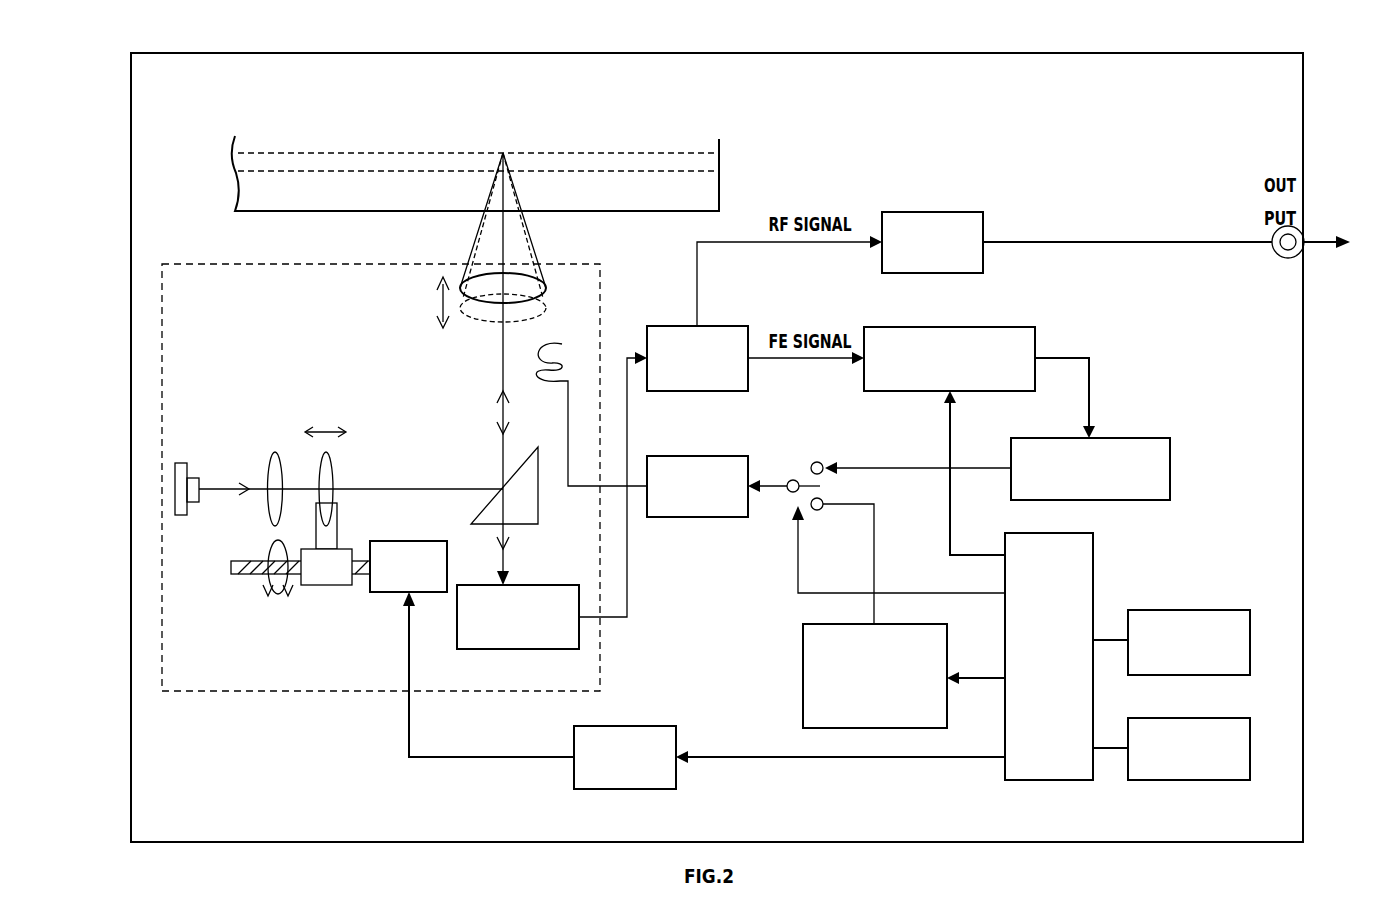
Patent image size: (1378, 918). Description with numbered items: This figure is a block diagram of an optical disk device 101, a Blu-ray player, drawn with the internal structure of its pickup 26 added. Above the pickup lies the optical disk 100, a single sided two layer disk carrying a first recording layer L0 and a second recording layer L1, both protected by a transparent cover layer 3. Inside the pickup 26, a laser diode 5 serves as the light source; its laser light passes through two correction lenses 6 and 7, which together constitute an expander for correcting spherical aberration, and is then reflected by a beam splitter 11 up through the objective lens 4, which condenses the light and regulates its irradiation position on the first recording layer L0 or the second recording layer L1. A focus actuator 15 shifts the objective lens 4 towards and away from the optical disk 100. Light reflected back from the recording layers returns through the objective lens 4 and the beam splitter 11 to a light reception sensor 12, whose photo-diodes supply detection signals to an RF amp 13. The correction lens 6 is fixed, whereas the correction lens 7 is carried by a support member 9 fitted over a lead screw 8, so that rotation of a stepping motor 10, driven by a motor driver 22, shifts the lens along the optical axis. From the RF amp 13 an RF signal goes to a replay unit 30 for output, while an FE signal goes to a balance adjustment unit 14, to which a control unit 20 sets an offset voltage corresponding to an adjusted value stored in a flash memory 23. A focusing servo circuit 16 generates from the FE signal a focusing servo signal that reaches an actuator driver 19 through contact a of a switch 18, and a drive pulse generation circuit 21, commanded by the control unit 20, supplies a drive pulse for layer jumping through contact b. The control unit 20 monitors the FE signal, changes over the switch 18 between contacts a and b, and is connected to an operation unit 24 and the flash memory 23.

The optical disk device 101 is at (1310, 95).
The optical disk 100 is at (290, 211).
The first recording layer L0 is at (594, 170).
The second recording layer L1 is at (660, 150).
The transparent cover layer 3 is at (713, 195).
The objective lens 4 is at (492, 302).
The pickup 26 is at (243, 691).
The laser diode 5 is at (181, 462).
The correction lens 6 is at (268, 462).
The correction lens 7 is at (333, 455).
The lead screw 8 is at (242, 575).
The support member 9 is at (326, 586).
The stepping motor 10 is at (387, 592).
The beam splitter 11 is at (538, 524).
The light reception sensor 12 is at (457, 650).
The focus actuator 15 is at (562, 344).
The RF amp 13 is at (731, 326).
The replay unit 30 is at (982, 212).
The balance adjustment unit 14 is at (983, 327).
The focusing servo circuit 16 is at (1133, 438).
The actuator driver 19 is at (731, 456).
The switch 18 is at (793, 495).
The drive pulse generation circuit 21 is at (803, 678).
The control unit 20 is at (1093, 780).
The operation unit 24 is at (1228, 610).
The flash memory 23 is at (1228, 780).
The motor driver 22 is at (676, 789).